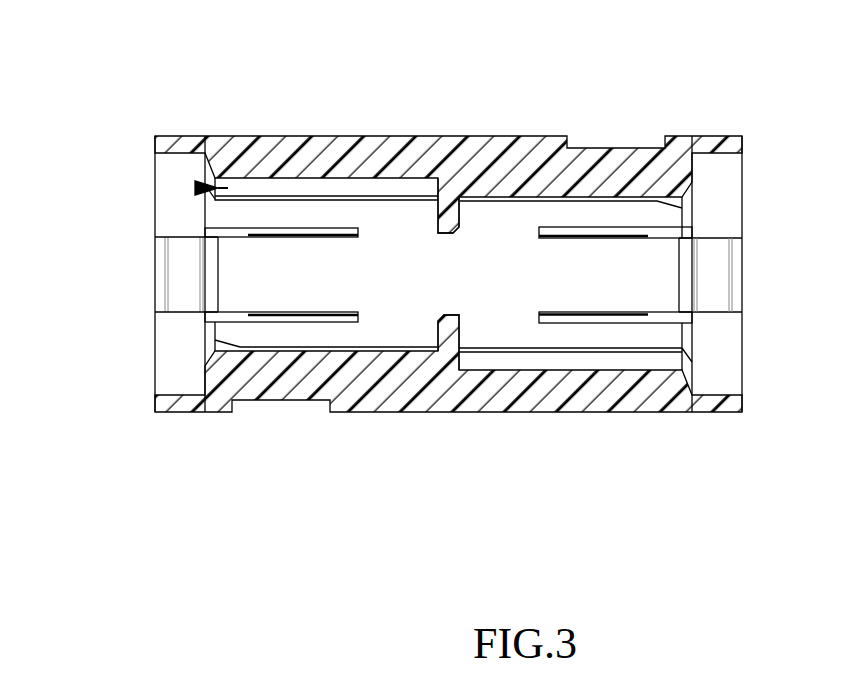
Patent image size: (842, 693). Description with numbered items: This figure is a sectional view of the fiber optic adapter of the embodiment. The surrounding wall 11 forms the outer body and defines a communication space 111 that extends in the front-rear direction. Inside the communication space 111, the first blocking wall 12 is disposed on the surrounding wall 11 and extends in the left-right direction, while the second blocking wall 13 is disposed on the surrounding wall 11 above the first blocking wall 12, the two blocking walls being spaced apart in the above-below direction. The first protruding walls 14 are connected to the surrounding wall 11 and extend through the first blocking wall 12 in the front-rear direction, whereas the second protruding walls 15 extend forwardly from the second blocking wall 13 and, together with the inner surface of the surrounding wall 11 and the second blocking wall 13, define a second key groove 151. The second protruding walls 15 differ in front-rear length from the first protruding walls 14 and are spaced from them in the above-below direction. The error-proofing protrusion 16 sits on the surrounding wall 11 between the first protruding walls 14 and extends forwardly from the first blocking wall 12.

The surrounding wall 11 is at (388, 136).
The communication space 111 is at (156, 166).
The first blocking wall 12 is at (459, 330).
The second blocking wall 13 is at (458, 218).
The first protruding walls 14 is at (240, 347).
The second protruding walls 15 is at (233, 199).
The second key groove 151 is at (197, 188).
The error-proofing protrusion 16 is at (220, 360).